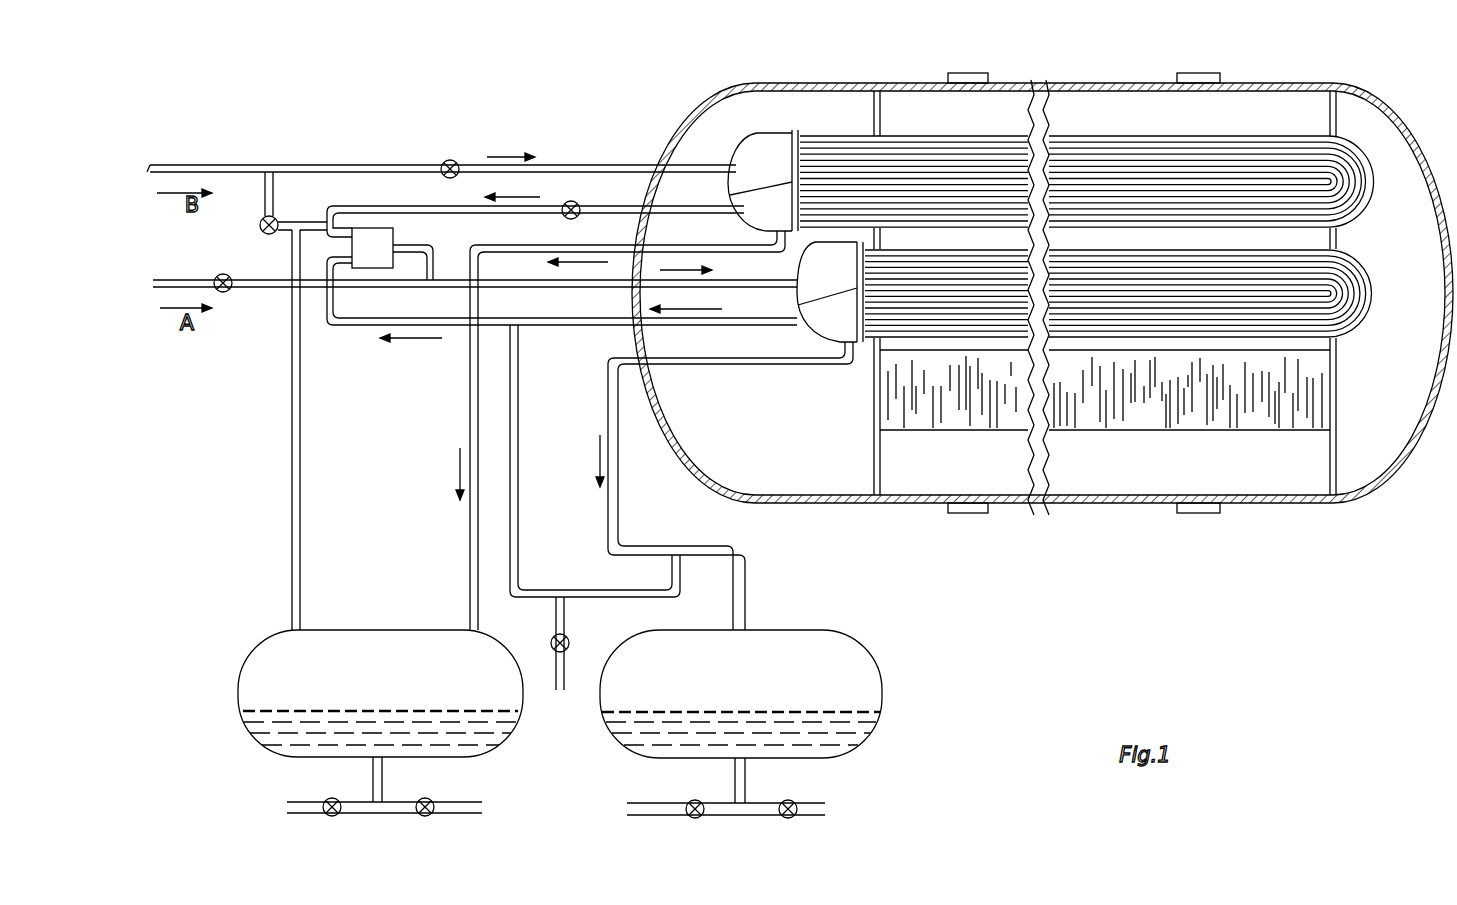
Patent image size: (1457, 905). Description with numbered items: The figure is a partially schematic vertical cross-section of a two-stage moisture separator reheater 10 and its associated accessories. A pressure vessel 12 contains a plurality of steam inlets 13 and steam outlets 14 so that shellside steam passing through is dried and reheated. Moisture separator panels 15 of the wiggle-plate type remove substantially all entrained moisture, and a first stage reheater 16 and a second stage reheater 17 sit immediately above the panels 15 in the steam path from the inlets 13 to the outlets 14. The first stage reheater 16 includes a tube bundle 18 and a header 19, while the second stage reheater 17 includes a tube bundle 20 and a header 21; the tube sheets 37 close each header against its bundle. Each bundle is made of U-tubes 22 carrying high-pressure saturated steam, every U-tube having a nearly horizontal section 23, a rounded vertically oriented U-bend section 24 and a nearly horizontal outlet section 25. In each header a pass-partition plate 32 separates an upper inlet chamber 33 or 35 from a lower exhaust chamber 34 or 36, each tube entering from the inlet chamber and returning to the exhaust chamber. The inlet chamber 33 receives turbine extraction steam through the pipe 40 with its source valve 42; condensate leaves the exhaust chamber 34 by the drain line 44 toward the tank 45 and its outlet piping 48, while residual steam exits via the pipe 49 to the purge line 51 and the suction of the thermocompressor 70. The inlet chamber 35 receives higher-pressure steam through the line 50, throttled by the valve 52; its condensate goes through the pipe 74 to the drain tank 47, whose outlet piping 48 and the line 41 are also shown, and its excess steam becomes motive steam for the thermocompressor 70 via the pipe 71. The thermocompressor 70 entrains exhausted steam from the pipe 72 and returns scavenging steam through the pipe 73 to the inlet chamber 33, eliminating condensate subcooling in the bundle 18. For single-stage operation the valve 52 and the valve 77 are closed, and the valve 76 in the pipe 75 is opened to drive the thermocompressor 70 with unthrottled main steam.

The moisture separator reheater 10 is at (1042, 292).
The pressure vessel 12 is at (1403, 470).
The steam inlets 13 is at (960, 513).
The steam outlets 14 is at (968, 73).
The moisture separator panels 15 is at (960, 395).
The first stage reheater 16 is at (1262, 253).
The second stage reheater 17 is at (1215, 119).
The tube bundle 18 is at (983, 251).
The header 19 is at (803, 291).
The tube bundle 20 is at (968, 135).
The header 21 is at (752, 168).
The U-tubes 22 is at (1111, 185).
The nearly horizontal section 23 is at (938, 136).
The U-bend section 24 is at (1370, 172).
The nearly horizontal outlet section 25 is at (1077, 228).
The pass-partition plate 32 is at (778, 181).
The upper inlet chamber 33 is at (808, 260).
The lower exhaust chamber 34 is at (842, 322).
The upper inlet chamber 35 is at (758, 140).
The lower exhaust chamber 36 is at (757, 210).
The tube sheet 37 is at (798, 132).
The pipe 40 is at (255, 280).
The line to tank 41 is at (292, 452).
The source valve 42 is at (225, 274).
The drain line 44 is at (683, 364).
The storage tank 45 is at (797, 630).
The drain tank 47 is at (393, 630).
The tank outlet line 48 is at (382, 792).
The pipe 49 is at (573, 318).
The line 50 is at (345, 163).
The purge line 51 is at (563, 605).
The valve 52 is at (455, 160).
The thermocompressor 70 is at (378, 228).
The pipe 71 is at (352, 206).
The pipe 72 is at (335, 325).
The pipe 73 is at (413, 262).
The pipe 74 is at (470, 394).
The pipe 75 is at (265, 178).
The valve 76 is at (274, 218).
The valve 77 is at (580, 204).